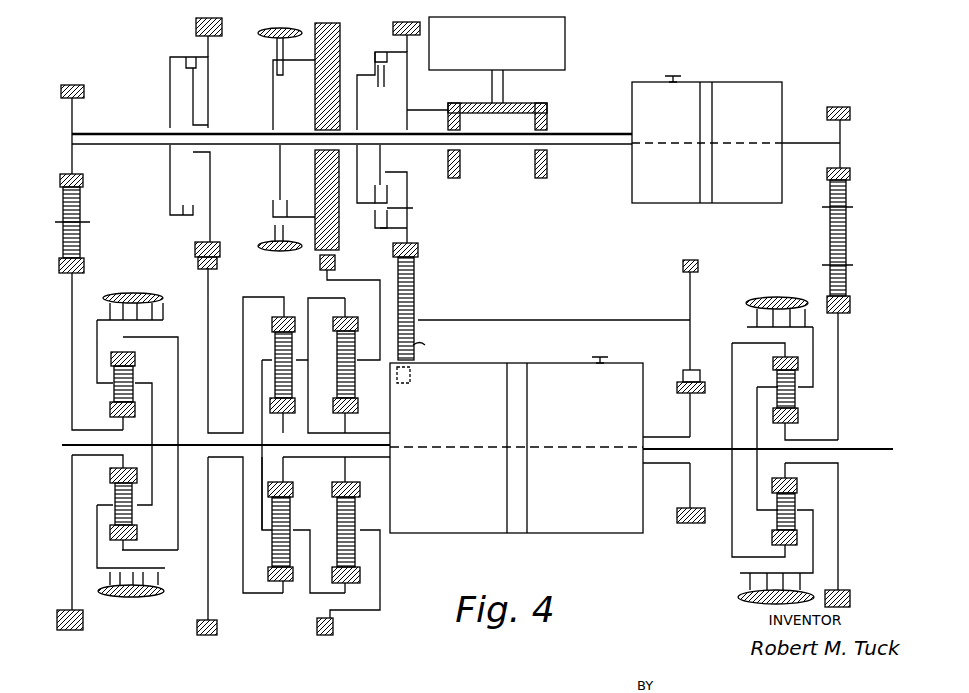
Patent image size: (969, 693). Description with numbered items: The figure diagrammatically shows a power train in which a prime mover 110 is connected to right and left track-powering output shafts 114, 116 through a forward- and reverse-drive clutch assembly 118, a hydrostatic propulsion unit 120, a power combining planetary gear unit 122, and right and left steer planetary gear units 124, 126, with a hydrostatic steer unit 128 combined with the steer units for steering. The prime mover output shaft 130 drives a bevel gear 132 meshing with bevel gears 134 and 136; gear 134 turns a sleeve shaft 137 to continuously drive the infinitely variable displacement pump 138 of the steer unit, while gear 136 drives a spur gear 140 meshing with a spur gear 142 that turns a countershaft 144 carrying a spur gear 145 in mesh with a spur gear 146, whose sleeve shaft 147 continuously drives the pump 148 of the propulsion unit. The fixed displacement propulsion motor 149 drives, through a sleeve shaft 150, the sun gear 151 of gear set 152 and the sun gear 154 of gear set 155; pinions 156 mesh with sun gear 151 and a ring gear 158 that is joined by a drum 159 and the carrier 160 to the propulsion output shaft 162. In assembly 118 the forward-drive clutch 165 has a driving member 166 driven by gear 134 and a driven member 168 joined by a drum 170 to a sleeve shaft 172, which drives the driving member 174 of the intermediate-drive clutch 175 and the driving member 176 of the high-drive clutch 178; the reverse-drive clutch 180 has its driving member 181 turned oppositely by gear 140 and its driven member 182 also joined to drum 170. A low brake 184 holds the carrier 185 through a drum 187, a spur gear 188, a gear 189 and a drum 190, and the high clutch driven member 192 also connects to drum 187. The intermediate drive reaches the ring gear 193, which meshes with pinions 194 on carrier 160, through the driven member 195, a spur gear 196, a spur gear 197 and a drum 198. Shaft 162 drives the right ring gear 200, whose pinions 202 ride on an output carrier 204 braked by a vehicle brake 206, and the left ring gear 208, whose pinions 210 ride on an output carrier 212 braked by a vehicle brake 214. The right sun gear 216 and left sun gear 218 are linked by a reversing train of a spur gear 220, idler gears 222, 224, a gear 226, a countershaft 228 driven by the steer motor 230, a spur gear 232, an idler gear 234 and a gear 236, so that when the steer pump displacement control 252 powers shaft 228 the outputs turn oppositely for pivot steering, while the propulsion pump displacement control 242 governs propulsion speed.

The prime mover 110 is at (565, 40).
The right output shaft 114 is at (870, 449).
The left output shaft 116 is at (90, 445).
The forward- and reverse-drive clutch assembly 118 is at (380, 50).
The propulsion unit 120 is at (460, 358).
The power combining planetary gear unit 122 is at (345, 618).
The right steer planetary gear unit 124 is at (762, 605).
The left steer planetary gear unit 126 is at (115, 600).
The steer unit 128 is at (740, 210).
The prime mover output shaft 130 is at (505, 85).
The bevel gear 132 is at (547, 106).
The bevel gear 134 is at (547, 165).
The bevel gear 136 is at (460, 165).
The sleeve shaft 137 is at (605, 150).
The infinitely variable displacement pump 138 is at (660, 92).
The spur gear 140 is at (418, 247).
The spur gear 142 is at (414, 283).
The countershaft 144 is at (600, 318).
The spur gear 145 is at (683, 265).
The spur gear 146 is at (677, 385).
The sleeve shaft 147 is at (655, 437).
The pump 148 is at (610, 535).
The propulsion motor 149 is at (455, 515).
The sleeve shaft 150 is at (375, 460).
The sun gear 151 is at (360, 405).
The gear set 152 is at (335, 530).
The sun gear 154 is at (287, 410).
The gear set 155 is at (270, 345).
The pinions 156 is at (355, 370).
The ring gear 158 is at (360, 575).
The drum 159 is at (330, 298).
The carrier 160 is at (300, 360).
The propulsion output shaft 162 is at (375, 447).
The forward-drive clutch 165 is at (372, 215).
The clutch driving member 166 is at (380, 100).
The forward-clutch driven member 168 is at (387, 195).
The drum 170 is at (365, 190).
The sleeve shaft 172 is at (172, 138).
The clutch driving member 174 is at (196, 65).
The intermediate-drive-establishing clutch 175 is at (172, 58).
The clutch driving member 176 is at (280, 170).
The high-drive-establishing clutch 178 is at (272, 205).
The reverse-drive clutch 180 is at (392, 62).
The clutch driving member 181 is at (375, 62).
The reverse clutch driven member 182 is at (414, 206).
The low brake 184 is at (258, 38).
The carrier 185 is at (370, 355).
The drum 187 is at (305, 30).
The spur gear 188 is at (315, 82).
The gear 189 is at (318, 265).
The drum 190 is at (355, 612).
The driven clutch plate member 192 is at (273, 62).
The ring gear 193 is at (286, 583).
The pinions 194 is at (272, 545).
The intermediate-clutch driven member 195 is at (183, 92).
The spur gear 196 is at (196, 28).
The spur gear 197 is at (215, 635).
The drum 198 is at (262, 297).
The ring gear 200 is at (800, 362).
The pinions 202 is at (800, 392).
The output carrier 204 is at (758, 390).
The vehicle brake 206 is at (747, 300).
The ring gear 208 is at (130, 355).
The pinions 210 is at (133, 492).
The output carrier 212 is at (145, 500).
The vehicle brake 214 is at (163, 300).
The sun gear 216 is at (800, 417).
The sun gear 218 is at (110, 475).
The spur gear 220 is at (850, 302).
The idler gear 222 is at (848, 235).
The idler gear 224 is at (850, 180).
The gear 226 is at (850, 113).
The countershaft 228 is at (830, 143).
The fixed displacement motor 230 is at (790, 98).
The spur gear 232 is at (68, 85).
The idler gear 234 is at (83, 200).
The gear 236 is at (74, 632).
The pump displacement control 242 is at (603, 352).
The pump displacement control 252 is at (683, 73).